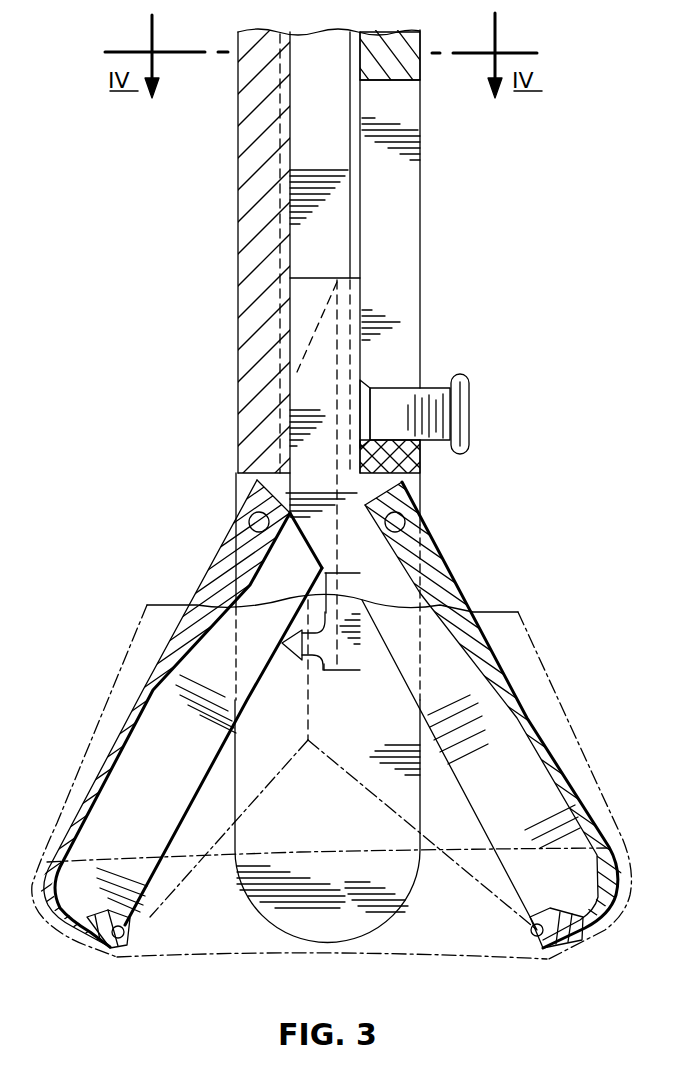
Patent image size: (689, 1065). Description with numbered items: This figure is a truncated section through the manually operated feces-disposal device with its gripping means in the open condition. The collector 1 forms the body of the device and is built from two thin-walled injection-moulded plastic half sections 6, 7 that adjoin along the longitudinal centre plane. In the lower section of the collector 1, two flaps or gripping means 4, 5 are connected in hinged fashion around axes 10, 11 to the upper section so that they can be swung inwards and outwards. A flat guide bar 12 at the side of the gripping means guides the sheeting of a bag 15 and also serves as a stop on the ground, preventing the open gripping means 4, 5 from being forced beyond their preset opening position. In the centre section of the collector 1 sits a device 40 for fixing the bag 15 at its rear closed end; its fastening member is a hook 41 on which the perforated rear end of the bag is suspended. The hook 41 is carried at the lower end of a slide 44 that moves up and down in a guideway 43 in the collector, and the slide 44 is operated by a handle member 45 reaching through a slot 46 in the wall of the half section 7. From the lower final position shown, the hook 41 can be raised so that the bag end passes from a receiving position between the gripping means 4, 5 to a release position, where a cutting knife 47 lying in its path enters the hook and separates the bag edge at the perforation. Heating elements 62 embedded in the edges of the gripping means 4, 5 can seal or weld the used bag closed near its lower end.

The collector 1 is at (230, 211).
The gripping means 4 is at (206, 572).
The gripping means 5 is at (457, 580).
The half section 6 is at (238, 70).
The half section 7 is at (421, 46).
The axis 10 is at (249, 515).
The axis 11 is at (406, 518).
The guide bar 12 is at (410, 902).
The bag 15 is at (338, 748).
The device to fix a bag 40 is at (372, 306).
The hook 41 is at (293, 655).
The guideway 43 is at (283, 157).
The slide 44 is at (423, 477).
The handle member 45 is at (472, 410).
The slot 46 is at (418, 203).
The cutting knife 47 is at (364, 346).
The heating element 62 is at (125, 931).